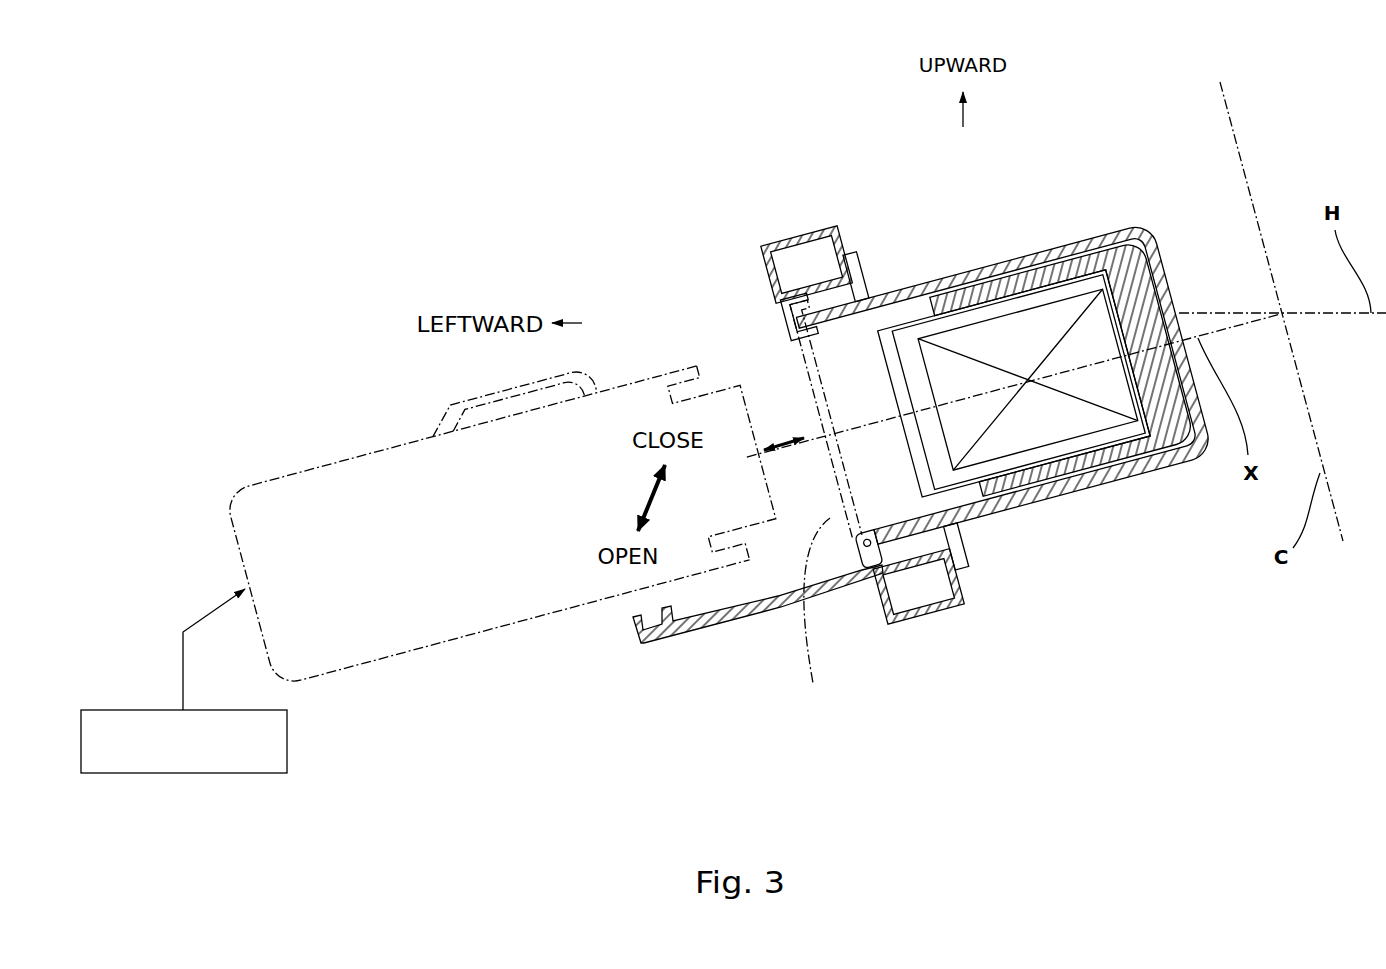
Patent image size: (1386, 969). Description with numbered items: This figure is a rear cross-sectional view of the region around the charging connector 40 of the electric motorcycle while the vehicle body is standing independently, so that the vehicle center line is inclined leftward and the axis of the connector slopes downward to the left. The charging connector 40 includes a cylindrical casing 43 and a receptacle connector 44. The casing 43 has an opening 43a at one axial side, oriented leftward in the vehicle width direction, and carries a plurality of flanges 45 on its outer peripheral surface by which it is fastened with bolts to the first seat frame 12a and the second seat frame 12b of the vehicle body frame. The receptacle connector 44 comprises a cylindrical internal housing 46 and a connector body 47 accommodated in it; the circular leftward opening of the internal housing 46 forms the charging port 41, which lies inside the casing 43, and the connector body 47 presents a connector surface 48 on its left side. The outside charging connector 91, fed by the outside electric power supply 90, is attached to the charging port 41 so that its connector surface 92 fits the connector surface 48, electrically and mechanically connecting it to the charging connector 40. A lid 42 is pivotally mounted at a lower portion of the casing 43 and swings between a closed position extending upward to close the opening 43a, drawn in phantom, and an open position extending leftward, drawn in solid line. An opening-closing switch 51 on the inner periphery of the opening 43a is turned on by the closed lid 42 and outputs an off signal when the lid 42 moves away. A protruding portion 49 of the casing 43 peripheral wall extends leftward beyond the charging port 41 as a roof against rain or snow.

The charging connector 40 is at (1003, 403).
The charging port 41 is at (971, 634).
The lid 42 is at (760, 610).
The casing 43 is at (988, 326).
The opening 43a is at (857, 540).
The receptacle connector 44 is at (1058, 252).
The flanges 45 is at (866, 262).
The internal housing 46 is at (1083, 457).
The connector body 47 is at (977, 337).
The connector surface 48 is at (898, 360).
The protruding portion 49 is at (814, 216).
The opening-closing switch 51 is at (793, 355).
The first seat frame 12a is at (812, 236).
The second seat frame 12b is at (908, 622).
The outside electric power supply 90 is at (167, 775).
The outside charging connector 91 is at (523, 518).
The connector surface 92 is at (775, 400).